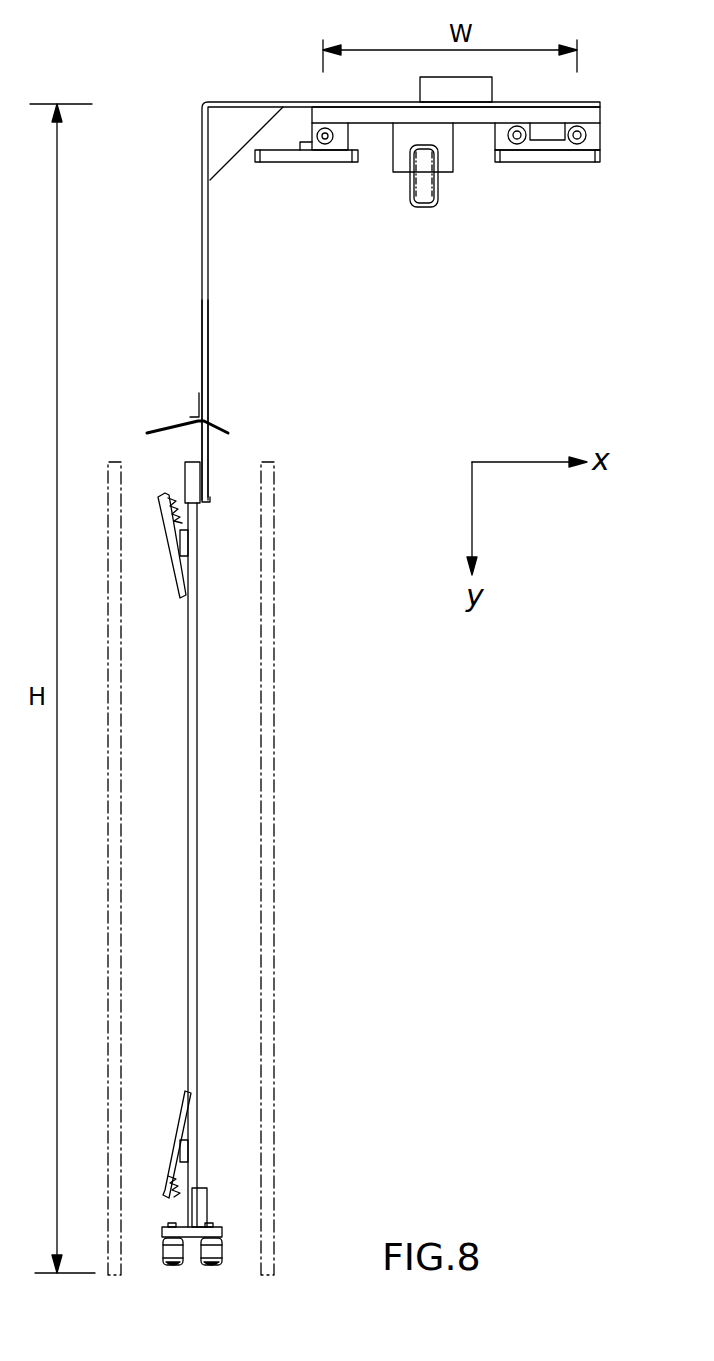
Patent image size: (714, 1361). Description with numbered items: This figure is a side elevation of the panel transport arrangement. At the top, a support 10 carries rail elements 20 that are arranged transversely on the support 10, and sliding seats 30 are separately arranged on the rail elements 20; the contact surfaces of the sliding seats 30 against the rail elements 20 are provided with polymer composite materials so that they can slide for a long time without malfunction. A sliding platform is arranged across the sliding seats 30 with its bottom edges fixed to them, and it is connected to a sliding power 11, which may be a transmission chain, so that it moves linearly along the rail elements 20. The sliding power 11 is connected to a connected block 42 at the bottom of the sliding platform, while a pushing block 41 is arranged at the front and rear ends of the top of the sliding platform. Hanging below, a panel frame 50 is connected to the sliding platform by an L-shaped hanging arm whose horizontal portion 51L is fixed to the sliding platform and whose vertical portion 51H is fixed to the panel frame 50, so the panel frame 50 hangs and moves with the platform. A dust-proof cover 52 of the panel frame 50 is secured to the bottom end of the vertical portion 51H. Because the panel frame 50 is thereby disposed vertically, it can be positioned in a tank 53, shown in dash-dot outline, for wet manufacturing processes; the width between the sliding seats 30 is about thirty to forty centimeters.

The support 10 is at (262, 163).
The sliding power 11 is at (404, 195).
The rail element 20 is at (315, 150).
The sliding seat 30 is at (340, 143).
The pushing block 41 is at (432, 95).
The connected block 42 is at (450, 140).
The panel frame 50 is at (360, 646).
The horizontal portion 51L is at (286, 101).
The vertical portion 51H is at (202, 208).
The dust-proof cover 52 is at (170, 428).
The tank 53 is at (290, 712).